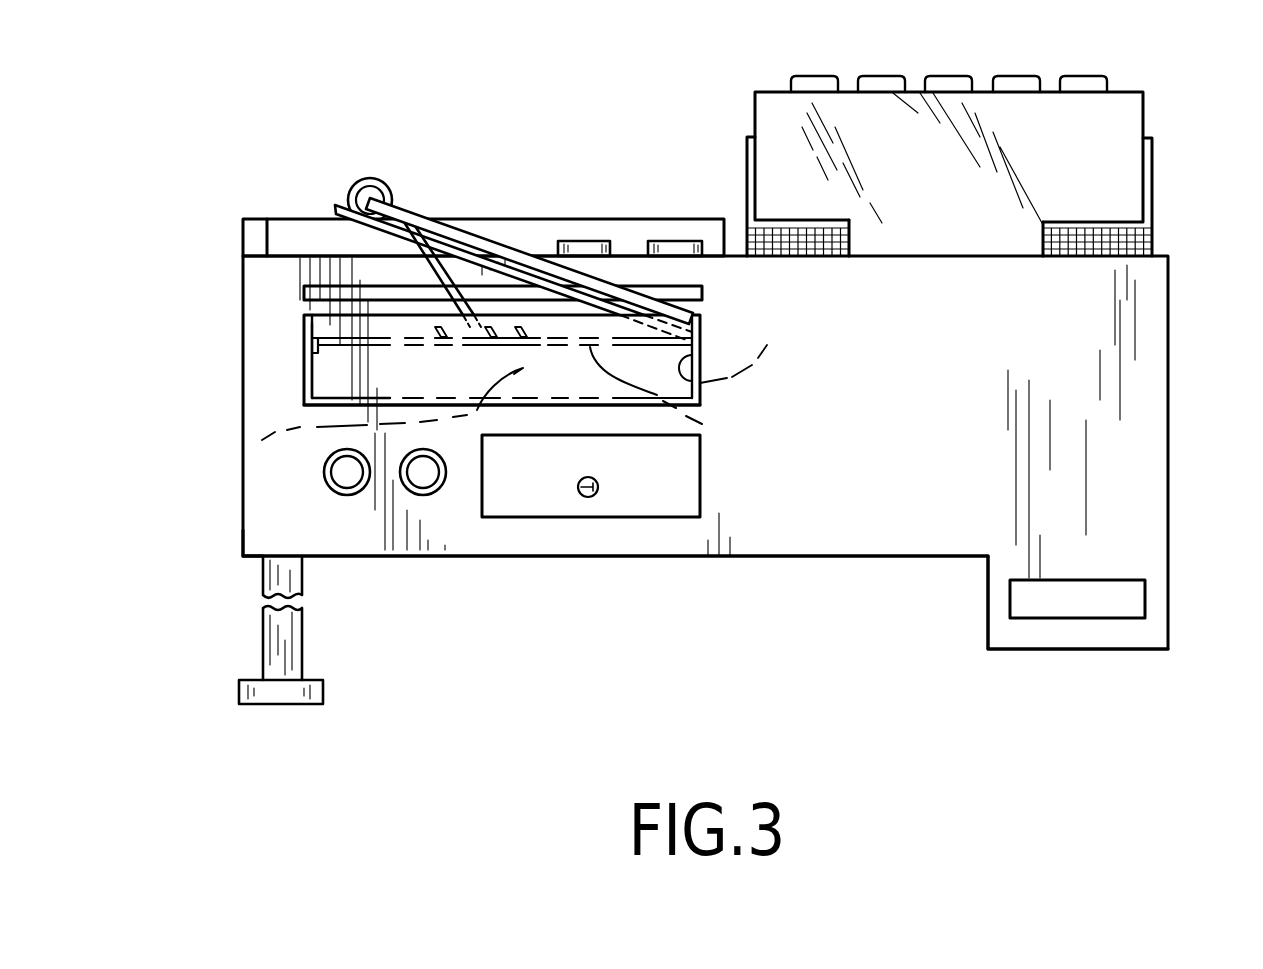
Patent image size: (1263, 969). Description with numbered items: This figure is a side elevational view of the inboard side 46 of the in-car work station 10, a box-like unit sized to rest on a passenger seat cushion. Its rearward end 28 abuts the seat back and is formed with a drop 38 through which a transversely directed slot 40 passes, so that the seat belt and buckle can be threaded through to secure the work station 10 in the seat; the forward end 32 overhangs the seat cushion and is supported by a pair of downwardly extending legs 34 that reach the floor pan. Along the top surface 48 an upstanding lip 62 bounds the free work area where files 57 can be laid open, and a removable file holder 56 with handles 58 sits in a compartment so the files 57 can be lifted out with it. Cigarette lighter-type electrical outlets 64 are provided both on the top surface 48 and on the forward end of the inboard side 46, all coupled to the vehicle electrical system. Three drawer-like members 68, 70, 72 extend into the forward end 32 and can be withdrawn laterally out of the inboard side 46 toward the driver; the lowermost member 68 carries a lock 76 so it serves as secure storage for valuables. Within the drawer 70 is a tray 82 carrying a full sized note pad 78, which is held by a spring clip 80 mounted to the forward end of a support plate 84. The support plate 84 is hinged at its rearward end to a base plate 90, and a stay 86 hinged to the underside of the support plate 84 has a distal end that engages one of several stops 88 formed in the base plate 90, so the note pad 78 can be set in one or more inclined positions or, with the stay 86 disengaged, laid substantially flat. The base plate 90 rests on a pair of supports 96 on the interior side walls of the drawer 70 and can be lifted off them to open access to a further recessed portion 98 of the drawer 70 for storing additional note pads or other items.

The work station 10 is at (298, 121).
The rearward end 28 is at (1168, 375).
The forward end 32 is at (243, 532).
The legs 34 is at (280, 645).
The drop 38 is at (988, 603).
The slot 40 is at (1035, 618).
The inboard side 46 is at (847, 490).
The top surface 48 is at (548, 256).
The file holder 56 is at (963, 133).
The files 57 is at (883, 137).
The handles 58 is at (747, 167).
The lip 62 is at (301, 226).
The electrical outlets 64 is at (665, 241).
The drawer-like member 68 is at (525, 490).
The drawer 70 is at (315, 405).
The drawer-like member 72 is at (312, 292).
The lock 76 is at (590, 497).
The note pad 78 is at (438, 222).
The spring clip 80 is at (366, 178).
The tray 82 is at (371, 226).
The support plate 84 is at (468, 262).
The stay 86 is at (445, 272).
The stops 88 is at (302, 382).
The base plate 90 is at (713, 427).
The supports 96 is at (777, 336).
The recessed portion 98 is at (250, 450).